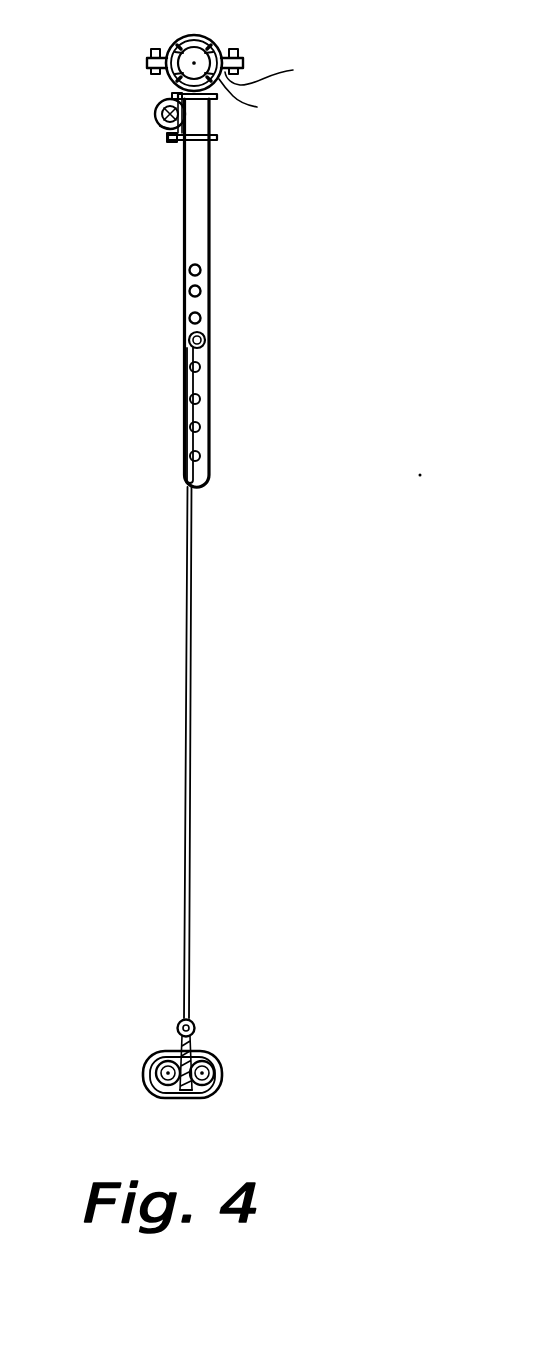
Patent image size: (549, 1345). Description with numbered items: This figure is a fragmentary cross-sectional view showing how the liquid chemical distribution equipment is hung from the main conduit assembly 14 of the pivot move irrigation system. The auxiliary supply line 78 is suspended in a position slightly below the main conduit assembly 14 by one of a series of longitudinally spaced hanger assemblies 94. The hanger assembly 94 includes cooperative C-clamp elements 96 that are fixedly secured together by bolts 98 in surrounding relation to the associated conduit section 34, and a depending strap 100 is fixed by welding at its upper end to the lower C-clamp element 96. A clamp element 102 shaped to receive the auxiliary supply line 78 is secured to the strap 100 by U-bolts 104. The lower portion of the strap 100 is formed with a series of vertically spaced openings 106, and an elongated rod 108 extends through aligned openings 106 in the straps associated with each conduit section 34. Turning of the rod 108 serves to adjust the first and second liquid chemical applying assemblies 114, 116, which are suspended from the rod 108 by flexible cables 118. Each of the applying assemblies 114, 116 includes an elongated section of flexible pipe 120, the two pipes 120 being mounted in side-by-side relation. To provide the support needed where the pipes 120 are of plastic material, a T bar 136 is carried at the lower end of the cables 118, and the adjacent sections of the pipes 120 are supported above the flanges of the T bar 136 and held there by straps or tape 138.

The main conduit assembly 14 is at (214, 33).
The hanger assembly 94 is at (245, 57).
The C-clamp element 96 is at (167, 81).
The bolt 98 is at (278, 72).
The conduit section 34 is at (261, 101).
The strap 100 is at (201, 218).
The U-bolt 104 is at (221, 95).
The clamp element 102 is at (155, 115).
The auxiliary supply line 78 is at (160, 126).
The opening 106 is at (200, 272).
The rod 108 is at (205, 340).
The flexible cable 118 is at (190, 700).
The flexible pipe 120 is at (214, 1056).
The first liquid chemical applying assembly 114 is at (148, 1079).
The second liquid chemical applying assembly 116 is at (226, 1080).
The T bar 136 is at (183, 1095).
The strap or tape 138 is at (158, 1092).